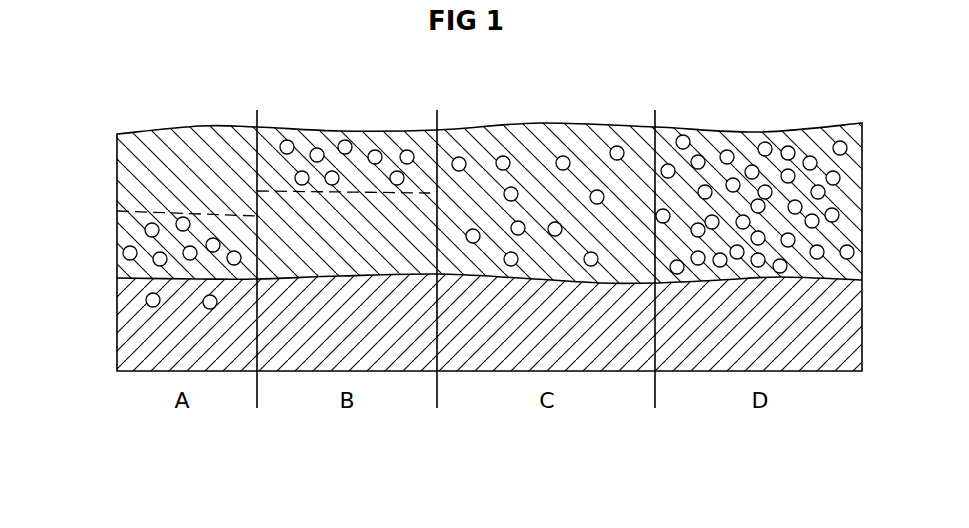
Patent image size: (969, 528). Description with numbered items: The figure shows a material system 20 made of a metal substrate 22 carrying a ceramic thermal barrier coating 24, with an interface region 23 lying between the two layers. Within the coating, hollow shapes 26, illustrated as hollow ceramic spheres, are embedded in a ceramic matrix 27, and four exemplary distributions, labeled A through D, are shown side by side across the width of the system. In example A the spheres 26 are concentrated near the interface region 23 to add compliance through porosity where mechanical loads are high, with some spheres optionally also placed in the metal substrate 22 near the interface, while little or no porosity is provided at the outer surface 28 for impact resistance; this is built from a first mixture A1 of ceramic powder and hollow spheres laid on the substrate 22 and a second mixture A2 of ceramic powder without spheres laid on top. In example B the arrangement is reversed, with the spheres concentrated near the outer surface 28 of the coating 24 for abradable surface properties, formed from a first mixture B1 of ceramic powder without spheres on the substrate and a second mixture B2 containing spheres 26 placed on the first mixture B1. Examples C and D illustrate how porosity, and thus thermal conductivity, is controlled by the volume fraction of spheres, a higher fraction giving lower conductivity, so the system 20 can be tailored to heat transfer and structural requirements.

The material system 20 is at (560, 96).
The metal substrate 22 is at (140, 329).
The interface region 23 is at (132, 276).
The ceramic thermal barrier coating 24 is at (128, 184).
The hollow shapes 26 is at (123, 253).
The ceramic matrix 27 is at (303, 142).
The outer surface 28 is at (390, 132).
The first mixture A1 is at (212, 226).
The second mixture A2 is at (158, 142).
The first mixture B1 is at (333, 259).
The second mixture B2 is at (360, 176).